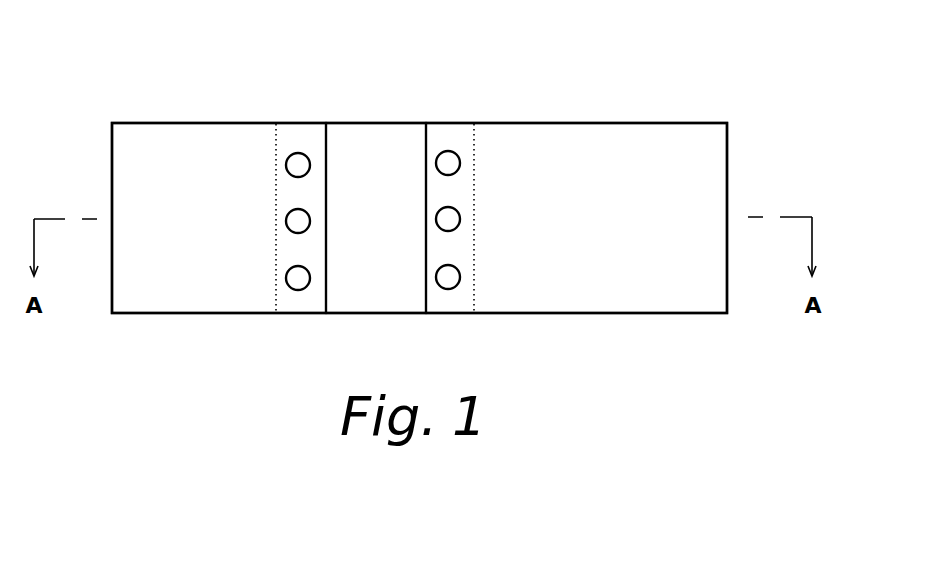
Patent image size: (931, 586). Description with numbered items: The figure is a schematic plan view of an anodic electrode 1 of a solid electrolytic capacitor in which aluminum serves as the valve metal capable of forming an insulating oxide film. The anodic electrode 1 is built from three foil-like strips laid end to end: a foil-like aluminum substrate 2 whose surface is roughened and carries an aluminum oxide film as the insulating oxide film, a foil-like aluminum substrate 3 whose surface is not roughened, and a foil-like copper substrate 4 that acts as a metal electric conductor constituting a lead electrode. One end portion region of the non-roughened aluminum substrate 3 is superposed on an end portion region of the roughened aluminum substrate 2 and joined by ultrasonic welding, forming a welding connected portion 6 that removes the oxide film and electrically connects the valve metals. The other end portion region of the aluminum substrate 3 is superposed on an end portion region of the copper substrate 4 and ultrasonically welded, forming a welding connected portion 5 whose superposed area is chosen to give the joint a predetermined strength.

The anodic electrode 1 is at (772, 143).
The foil-like aluminum substrate whose surface is roughened 2 is at (598, 142).
The foil-like aluminum substrate whose surface is not roughened 3 is at (377, 137).
The foil-like copper substrate 4 is at (225, 137).
The welding connected portion 5 is at (297, 162).
The welding connected portion 6 is at (447, 160).